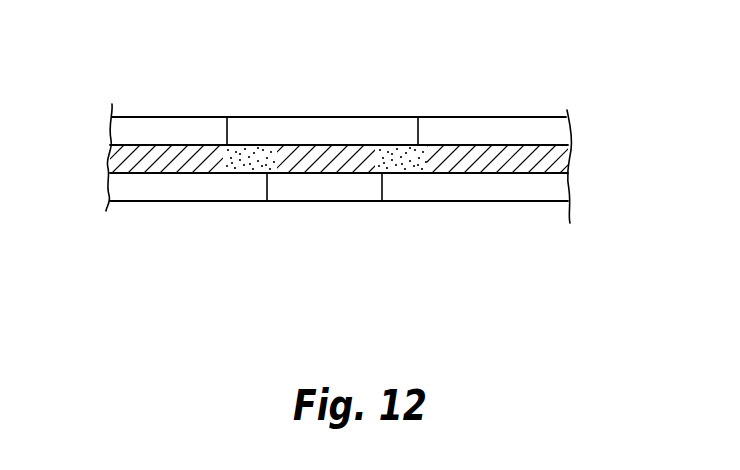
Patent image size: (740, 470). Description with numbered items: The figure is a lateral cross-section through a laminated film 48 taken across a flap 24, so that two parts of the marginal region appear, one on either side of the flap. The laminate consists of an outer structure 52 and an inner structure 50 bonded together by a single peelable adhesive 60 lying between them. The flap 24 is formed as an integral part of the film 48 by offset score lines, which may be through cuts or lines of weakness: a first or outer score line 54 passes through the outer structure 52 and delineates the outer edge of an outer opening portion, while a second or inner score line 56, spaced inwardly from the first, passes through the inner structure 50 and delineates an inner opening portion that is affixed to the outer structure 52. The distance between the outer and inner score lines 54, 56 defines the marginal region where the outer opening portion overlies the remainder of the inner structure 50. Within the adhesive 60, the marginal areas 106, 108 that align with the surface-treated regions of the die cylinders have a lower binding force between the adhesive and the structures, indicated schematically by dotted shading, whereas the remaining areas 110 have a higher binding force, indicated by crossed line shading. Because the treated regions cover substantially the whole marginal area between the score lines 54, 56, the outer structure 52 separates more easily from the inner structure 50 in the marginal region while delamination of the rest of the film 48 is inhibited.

The flap portion 24 is at (327, 117).
The film 48 is at (110, 118).
The inner structure 50 is at (550, 195).
The outer structure 52 is at (547, 135).
The outer score line 54 is at (228, 133).
The inner score line 56 is at (268, 190).
The peelable adhesive 60 is at (562, 160).
The marginal area 106 is at (247, 158).
The marginal area 108 is at (407, 158).
The remaining areas 110 is at (345, 153).